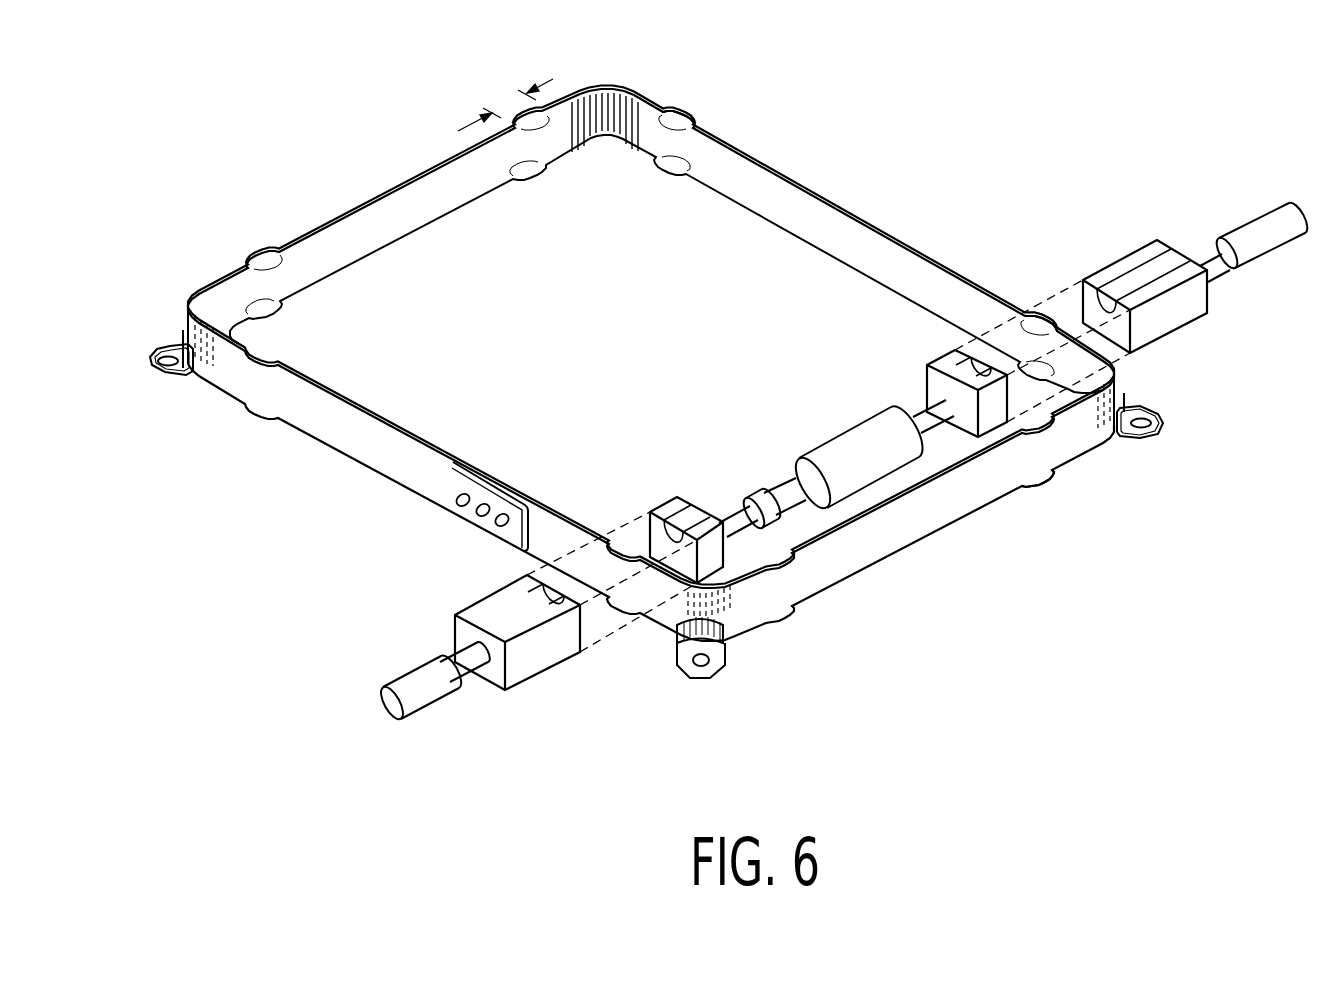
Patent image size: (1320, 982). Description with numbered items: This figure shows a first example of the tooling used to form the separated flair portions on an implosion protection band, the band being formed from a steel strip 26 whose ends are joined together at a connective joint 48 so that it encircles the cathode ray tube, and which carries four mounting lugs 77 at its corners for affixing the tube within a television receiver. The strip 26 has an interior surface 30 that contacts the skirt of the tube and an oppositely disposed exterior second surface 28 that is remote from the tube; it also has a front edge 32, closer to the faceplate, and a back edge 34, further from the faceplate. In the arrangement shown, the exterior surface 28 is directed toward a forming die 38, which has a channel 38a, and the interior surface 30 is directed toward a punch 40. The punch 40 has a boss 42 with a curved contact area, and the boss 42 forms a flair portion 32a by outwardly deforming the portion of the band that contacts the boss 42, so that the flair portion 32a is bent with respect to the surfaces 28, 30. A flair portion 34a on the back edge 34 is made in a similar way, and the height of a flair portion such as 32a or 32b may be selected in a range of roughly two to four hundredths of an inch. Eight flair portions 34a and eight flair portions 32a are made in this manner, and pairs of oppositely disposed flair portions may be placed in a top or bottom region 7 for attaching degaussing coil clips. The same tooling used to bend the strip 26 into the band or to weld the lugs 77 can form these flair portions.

The top region 7 is at (1040, 303).
The steel strip 26 is at (812, 226).
The second surface 28 is at (910, 528).
The surface 30 is at (888, 272).
The front edge 32 is at (683, 114).
The flair portion 32a is at (1043, 308).
The flair portion 32b is at (507, 106).
The back edge 34 is at (1045, 470).
The flair portion 34a is at (790, 605).
The forming die 38 is at (1127, 292).
The channel 38a is at (1145, 268).
The punch 40 is at (935, 355).
The boss 42 is at (965, 343).
The connective joint 48 is at (470, 520).
The mounting lug 77 is at (152, 360).